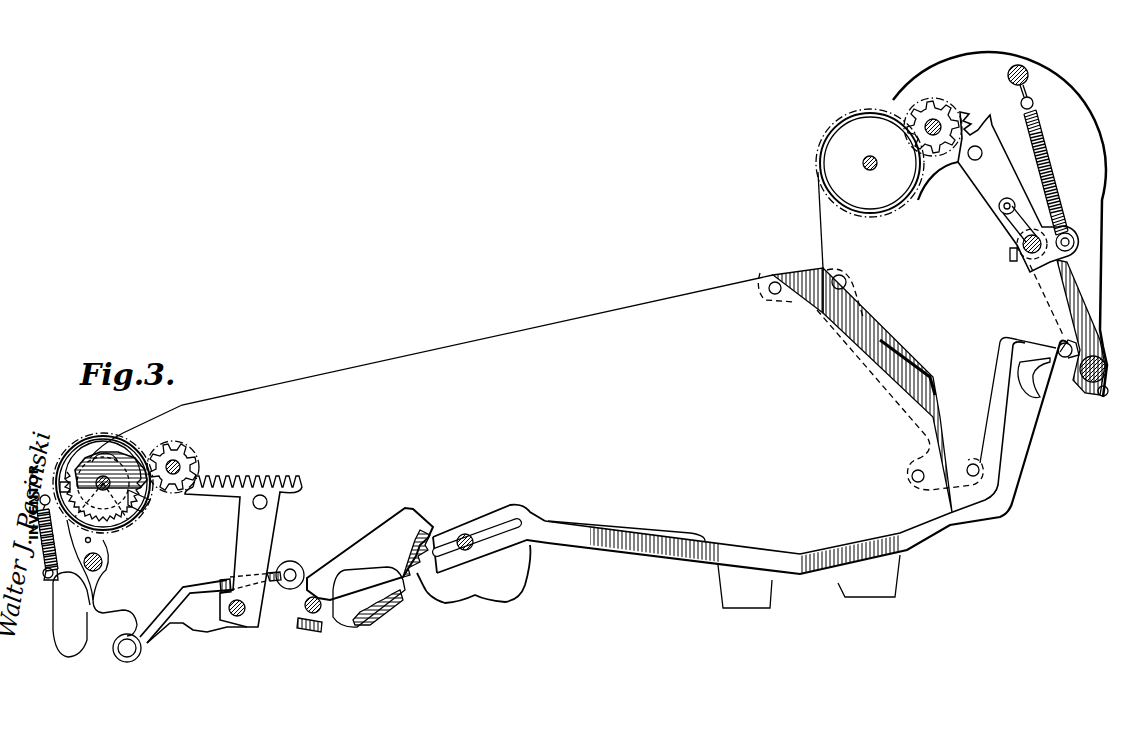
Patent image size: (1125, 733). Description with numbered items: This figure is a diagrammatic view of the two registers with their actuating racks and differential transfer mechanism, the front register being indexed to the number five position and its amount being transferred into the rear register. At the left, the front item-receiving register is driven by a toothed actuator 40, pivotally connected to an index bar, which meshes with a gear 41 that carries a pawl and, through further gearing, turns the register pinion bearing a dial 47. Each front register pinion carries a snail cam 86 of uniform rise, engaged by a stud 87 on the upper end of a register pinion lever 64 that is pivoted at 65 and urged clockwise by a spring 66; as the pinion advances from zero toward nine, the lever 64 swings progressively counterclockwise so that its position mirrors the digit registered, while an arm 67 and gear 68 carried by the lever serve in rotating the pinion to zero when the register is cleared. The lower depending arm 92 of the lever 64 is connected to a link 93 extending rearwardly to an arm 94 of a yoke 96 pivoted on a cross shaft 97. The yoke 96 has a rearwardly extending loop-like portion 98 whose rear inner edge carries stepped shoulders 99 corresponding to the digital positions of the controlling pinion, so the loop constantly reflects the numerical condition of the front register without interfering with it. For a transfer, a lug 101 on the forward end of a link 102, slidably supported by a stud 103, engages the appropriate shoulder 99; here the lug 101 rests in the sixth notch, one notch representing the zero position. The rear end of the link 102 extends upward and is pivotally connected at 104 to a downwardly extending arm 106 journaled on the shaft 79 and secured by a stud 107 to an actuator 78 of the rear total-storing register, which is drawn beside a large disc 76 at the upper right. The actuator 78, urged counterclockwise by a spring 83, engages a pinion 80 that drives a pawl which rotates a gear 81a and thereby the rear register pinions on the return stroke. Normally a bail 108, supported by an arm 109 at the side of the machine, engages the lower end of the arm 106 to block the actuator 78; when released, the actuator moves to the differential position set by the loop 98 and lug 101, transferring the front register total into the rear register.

The toothed actuator 40 is at (243, 522).
The gear 41 is at (190, 452).
The dial 47 is at (140, 503).
The register pinion lever 64 is at (90, 540).
The pivot 65 is at (102, 560).
The spring 66 is at (50, 578).
The arm 67 is at (147, 500).
The gear 68 is at (103, 448).
The disc 76 is at (882, 210).
The actuator 78 is at (990, 187).
The shaft 79 is at (1022, 252).
The pinion 80 is at (942, 115).
The gear 81a is at (912, 100).
The spring 83 is at (1058, 172).
The snail cam 86 is at (87, 463).
The stud 87 is at (67, 480).
The depending arm 92 is at (100, 615).
The link 93 is at (200, 588).
The arm 94 is at (300, 593).
The yoke 96 is at (310, 632).
The cross shaft 97 is at (303, 618).
The loop-like portion 98 is at (355, 543).
The shoulders 99 is at (412, 542).
The lug 101 is at (388, 570).
The link 102 is at (573, 527).
The stud 103 is at (468, 550).
The pivotal connection 104 is at (1056, 347).
The arm 106 is at (1050, 352).
The stud 107 is at (1002, 215).
The bail 108 is at (1089, 387).
The arm 109 is at (1085, 325).